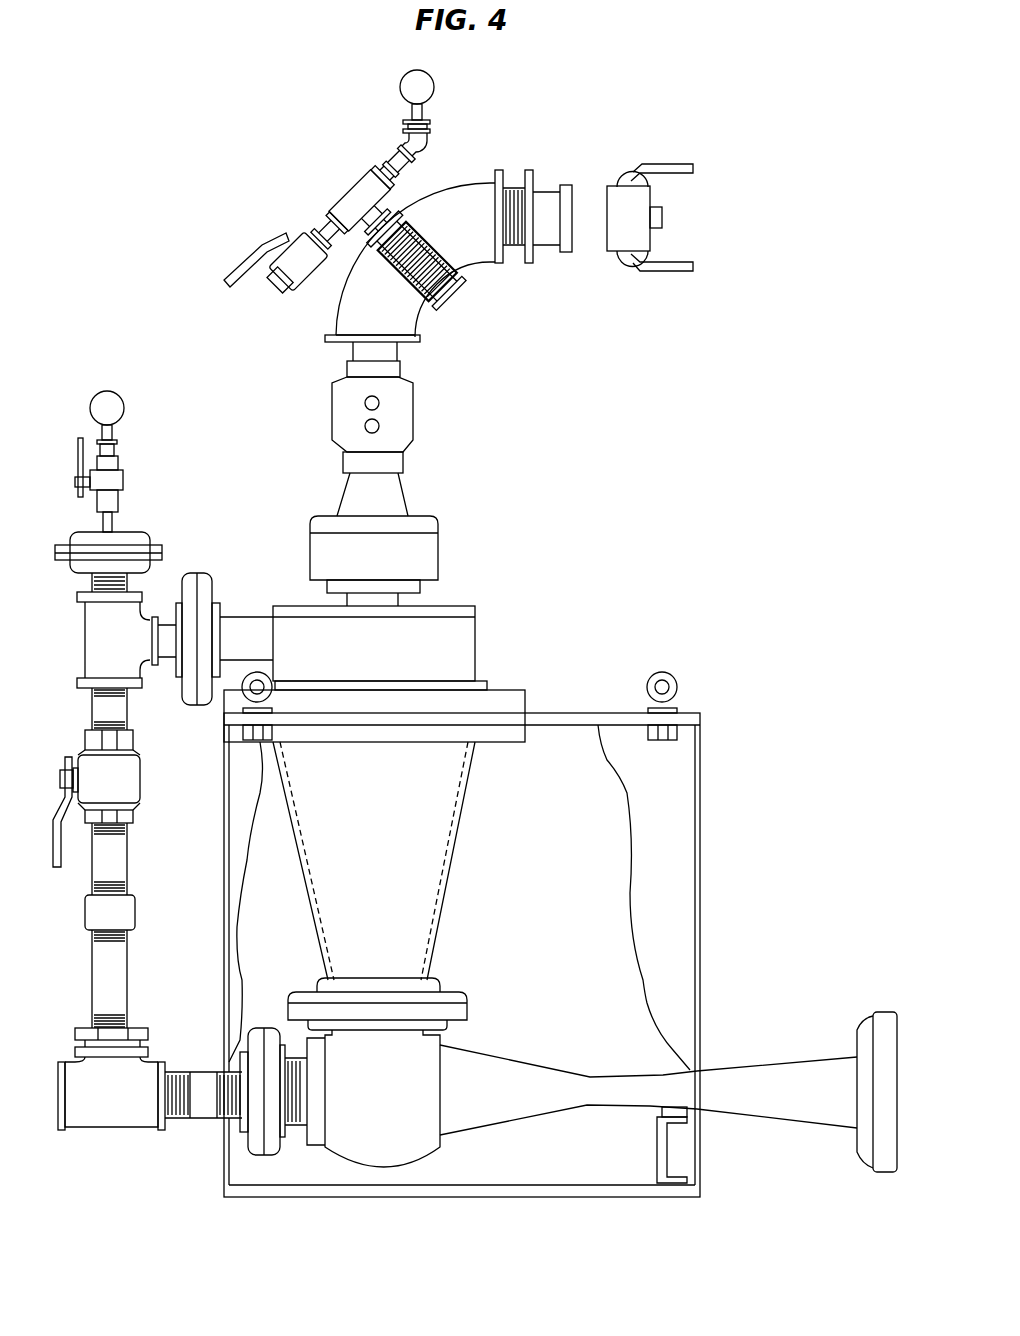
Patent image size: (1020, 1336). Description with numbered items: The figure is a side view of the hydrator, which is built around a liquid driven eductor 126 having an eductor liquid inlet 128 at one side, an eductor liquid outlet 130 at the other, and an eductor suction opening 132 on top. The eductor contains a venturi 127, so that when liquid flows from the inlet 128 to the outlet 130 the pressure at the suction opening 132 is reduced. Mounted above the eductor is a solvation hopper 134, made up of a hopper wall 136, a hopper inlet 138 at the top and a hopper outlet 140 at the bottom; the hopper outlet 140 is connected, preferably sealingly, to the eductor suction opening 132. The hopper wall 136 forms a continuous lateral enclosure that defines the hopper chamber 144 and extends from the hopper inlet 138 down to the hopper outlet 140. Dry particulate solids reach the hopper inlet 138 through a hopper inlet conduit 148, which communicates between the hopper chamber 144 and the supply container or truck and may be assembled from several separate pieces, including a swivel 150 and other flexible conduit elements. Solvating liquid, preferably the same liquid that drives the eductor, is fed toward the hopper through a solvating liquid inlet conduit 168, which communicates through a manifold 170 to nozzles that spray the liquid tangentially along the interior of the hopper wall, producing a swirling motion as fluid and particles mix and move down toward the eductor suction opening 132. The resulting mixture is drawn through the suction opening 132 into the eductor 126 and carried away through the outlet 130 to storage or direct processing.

The liquid driven eductor 126 is at (792, 1058).
The venturi 127 is at (788, 1120).
The eductor liquid inlet 128 is at (178, 1122).
The eductor liquid outlet 130 is at (885, 1012).
The eductor suction opening 132 is at (378, 1033).
The solvation hopper 134 is at (482, 847).
The hopper wall 136 is at (472, 777).
The hopper inlet 138 is at (488, 687).
The hopper outlet 140 is at (448, 980).
The hopper chamber 144 is at (385, 809).
The hopper inlet conduit 148 is at (400, 600).
The swivel 150 is at (417, 403).
The solvating liquid inlet conduit 168 is at (245, 617).
The manifold 170 is at (477, 633).